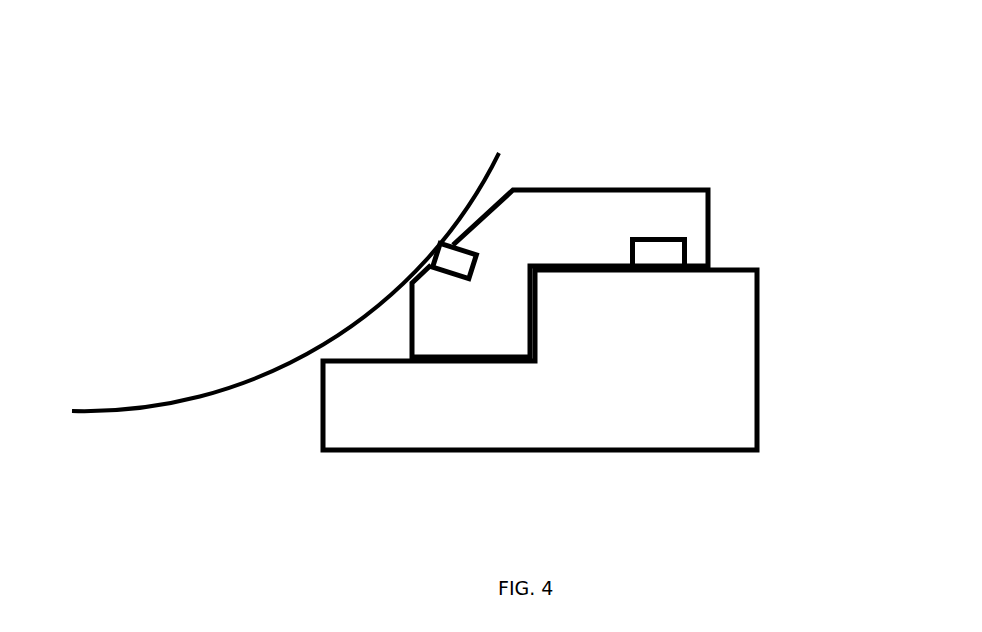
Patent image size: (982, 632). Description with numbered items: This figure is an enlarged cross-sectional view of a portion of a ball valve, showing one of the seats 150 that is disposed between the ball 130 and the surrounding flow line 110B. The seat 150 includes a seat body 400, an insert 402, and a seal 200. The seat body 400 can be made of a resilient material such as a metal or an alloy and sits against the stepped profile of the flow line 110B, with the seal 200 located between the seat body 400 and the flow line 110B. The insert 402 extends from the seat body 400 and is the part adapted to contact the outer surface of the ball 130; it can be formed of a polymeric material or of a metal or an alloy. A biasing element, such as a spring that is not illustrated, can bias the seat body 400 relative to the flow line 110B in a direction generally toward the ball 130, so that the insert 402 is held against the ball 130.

The seat 150 is at (148, 102).
The ball 130 is at (245, 385).
The flow line 110B is at (708, 412).
The seat body 400 is at (668, 208).
The insert 402 is at (445, 257).
The seal 200 is at (668, 257).